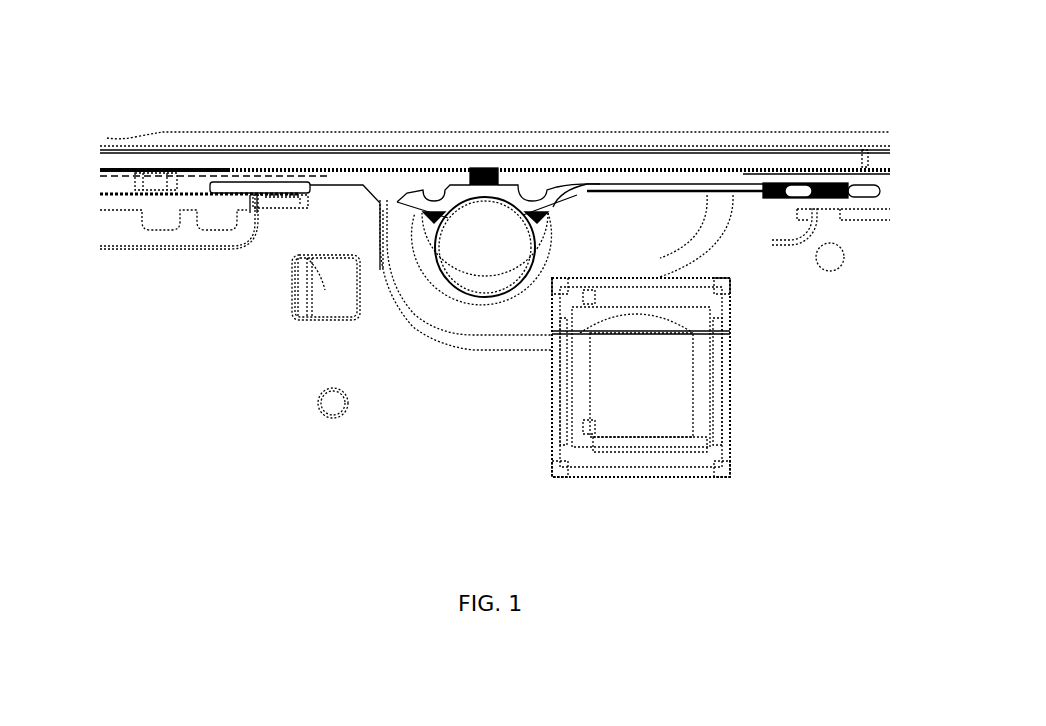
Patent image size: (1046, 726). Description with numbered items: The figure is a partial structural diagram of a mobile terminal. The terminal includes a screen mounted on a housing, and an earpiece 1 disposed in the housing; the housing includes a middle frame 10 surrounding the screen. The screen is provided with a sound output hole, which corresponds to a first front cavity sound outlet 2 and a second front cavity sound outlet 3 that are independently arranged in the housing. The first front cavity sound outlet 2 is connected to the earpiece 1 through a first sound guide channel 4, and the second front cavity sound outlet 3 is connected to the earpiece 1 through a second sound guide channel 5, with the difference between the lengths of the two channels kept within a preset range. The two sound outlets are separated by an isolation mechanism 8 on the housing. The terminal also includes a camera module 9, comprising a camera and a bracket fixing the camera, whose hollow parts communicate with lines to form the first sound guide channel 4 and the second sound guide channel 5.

The earpiece 1 is at (712, 480).
The first front cavity sound outlet 2 is at (297, 182).
The second front cavity sound outlet 3 is at (645, 183).
The first sound guide channel 4 is at (417, 320).
The second sound guide channel 5 is at (717, 223).
The isolation mechanism 8 is at (483, 168).
The camera module 9 is at (468, 285).
The middle frame 10 is at (228, 133).